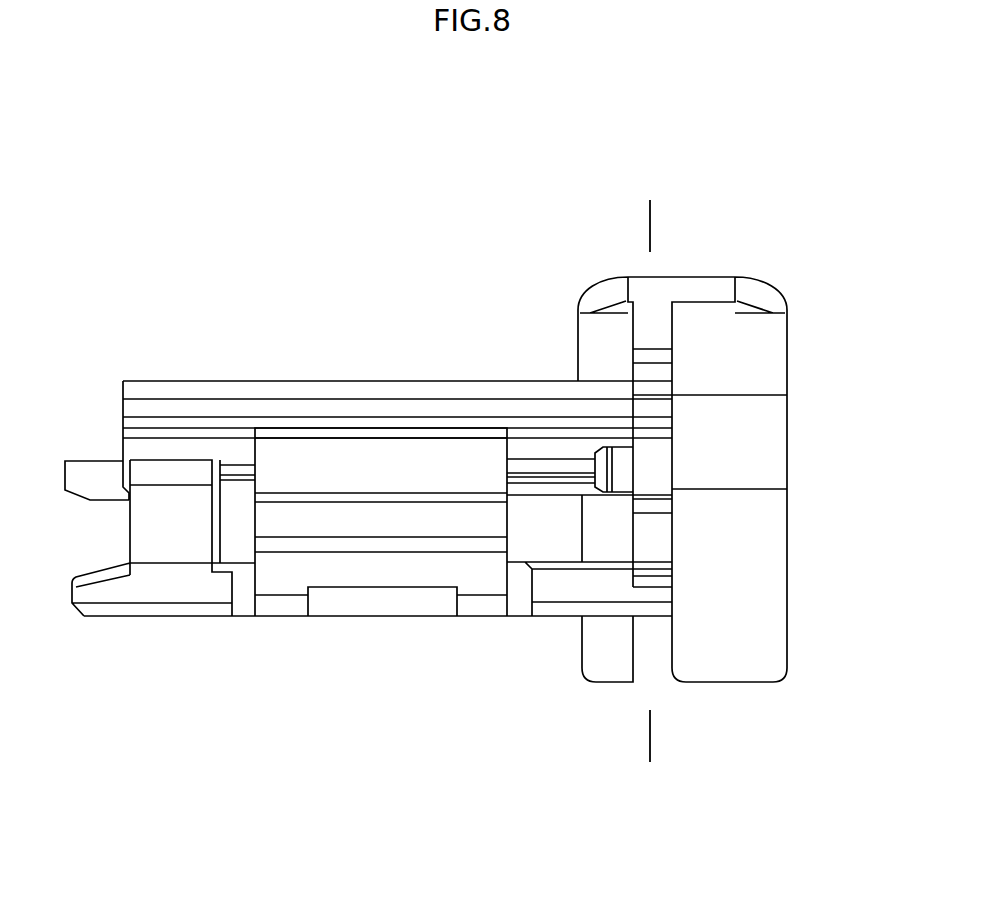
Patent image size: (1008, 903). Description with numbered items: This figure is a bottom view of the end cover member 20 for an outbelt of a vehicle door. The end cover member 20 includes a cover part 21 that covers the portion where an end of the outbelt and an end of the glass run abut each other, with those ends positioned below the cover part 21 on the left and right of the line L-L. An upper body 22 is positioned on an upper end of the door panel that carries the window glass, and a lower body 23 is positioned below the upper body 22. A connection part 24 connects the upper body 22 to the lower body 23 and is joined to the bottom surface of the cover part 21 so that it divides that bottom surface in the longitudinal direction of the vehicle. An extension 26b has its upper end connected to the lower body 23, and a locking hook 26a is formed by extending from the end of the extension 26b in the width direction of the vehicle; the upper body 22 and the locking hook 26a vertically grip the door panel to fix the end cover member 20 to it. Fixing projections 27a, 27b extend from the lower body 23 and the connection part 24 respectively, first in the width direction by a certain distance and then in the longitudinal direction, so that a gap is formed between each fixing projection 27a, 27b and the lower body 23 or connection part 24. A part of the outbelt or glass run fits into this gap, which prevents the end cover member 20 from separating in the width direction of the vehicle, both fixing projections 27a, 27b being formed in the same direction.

The end cover member 20 is at (833, 141).
The cover part 21 is at (770, 560).
The upper body 22 is at (360, 389).
The lower body 23 is at (241, 600).
The connection part 24 is at (660, 373).
The locking hook 26a is at (377, 527).
The extension 26b is at (282, 597).
The fixing projection 27a is at (84, 470).
The fixing projection 27b is at (613, 463).